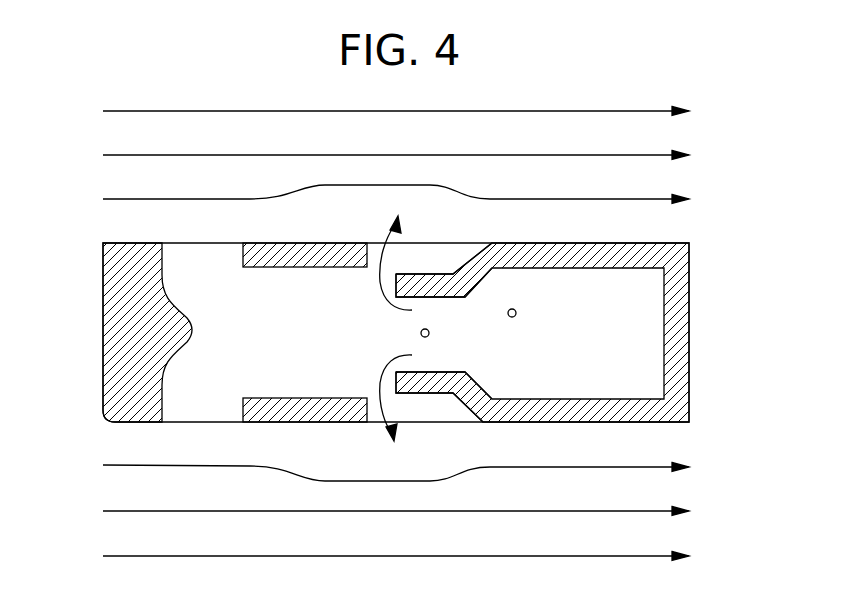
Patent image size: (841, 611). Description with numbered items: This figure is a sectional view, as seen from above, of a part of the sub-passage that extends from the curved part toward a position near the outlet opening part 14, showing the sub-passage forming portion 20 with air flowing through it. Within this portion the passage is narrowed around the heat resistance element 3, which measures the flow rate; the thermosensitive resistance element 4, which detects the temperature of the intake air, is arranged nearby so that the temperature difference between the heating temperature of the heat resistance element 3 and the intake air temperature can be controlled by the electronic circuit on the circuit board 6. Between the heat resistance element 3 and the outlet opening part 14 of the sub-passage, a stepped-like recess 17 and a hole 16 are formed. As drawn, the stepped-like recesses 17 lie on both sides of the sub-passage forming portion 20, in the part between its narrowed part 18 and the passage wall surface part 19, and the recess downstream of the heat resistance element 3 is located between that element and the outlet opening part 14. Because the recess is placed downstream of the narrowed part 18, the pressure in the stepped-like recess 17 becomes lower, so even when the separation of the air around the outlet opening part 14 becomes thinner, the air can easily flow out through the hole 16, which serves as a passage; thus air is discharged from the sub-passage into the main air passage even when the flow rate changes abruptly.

The heat resistance element 3 is at (429, 331).
The thermosensitive resistance element 4 is at (516, 311).
The circuit board 6 is at (541, 243).
The outlet opening part 14 is at (204, 253).
The hole 16 is at (396, 334).
The stepped-like recess 17 is at (418, 272).
The narrowed part 18 is at (447, 355).
The passage wall surface part 19 is at (303, 243).
The sub-passage forming portion 20 is at (690, 328).